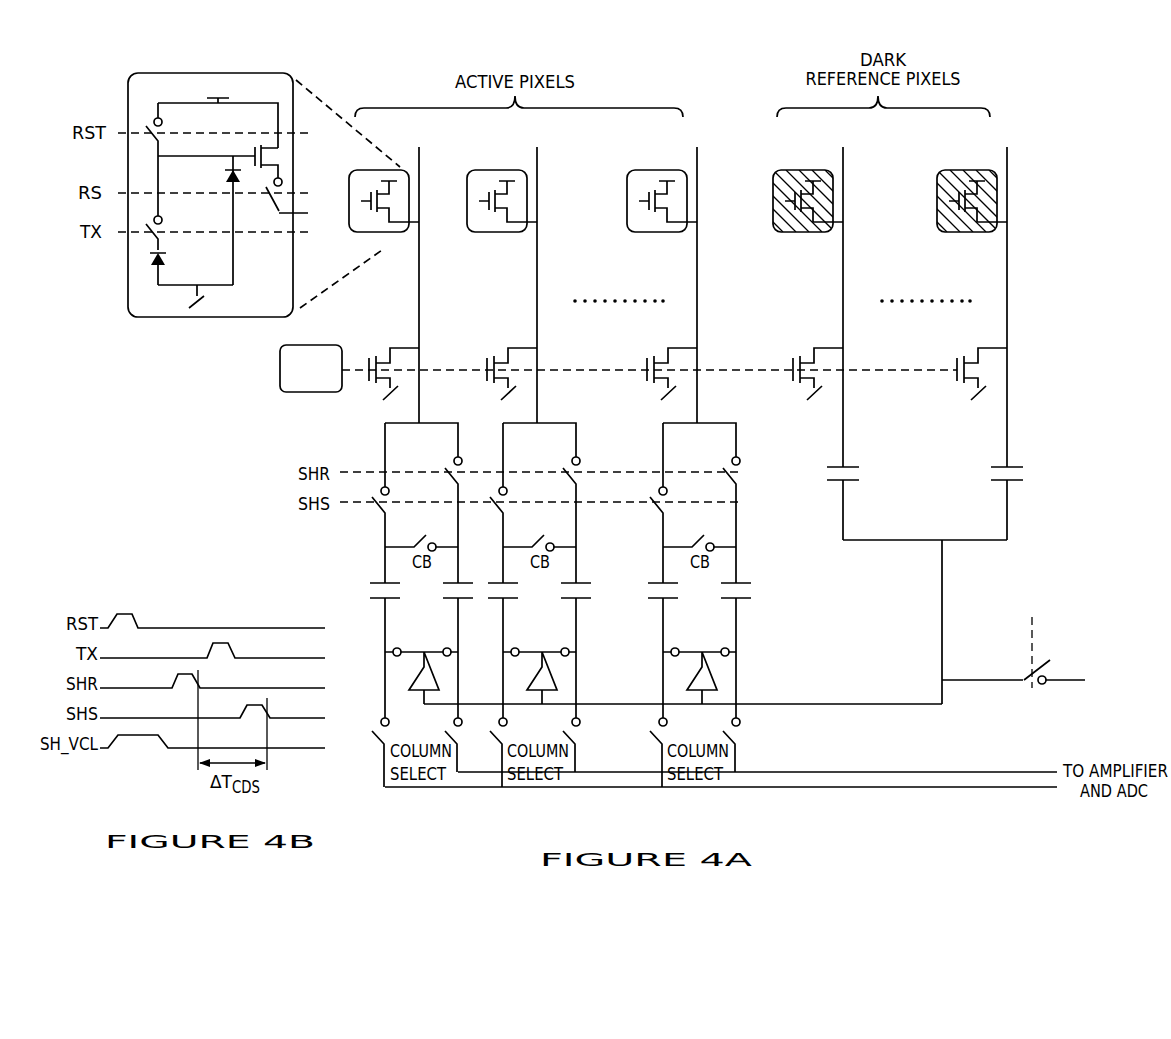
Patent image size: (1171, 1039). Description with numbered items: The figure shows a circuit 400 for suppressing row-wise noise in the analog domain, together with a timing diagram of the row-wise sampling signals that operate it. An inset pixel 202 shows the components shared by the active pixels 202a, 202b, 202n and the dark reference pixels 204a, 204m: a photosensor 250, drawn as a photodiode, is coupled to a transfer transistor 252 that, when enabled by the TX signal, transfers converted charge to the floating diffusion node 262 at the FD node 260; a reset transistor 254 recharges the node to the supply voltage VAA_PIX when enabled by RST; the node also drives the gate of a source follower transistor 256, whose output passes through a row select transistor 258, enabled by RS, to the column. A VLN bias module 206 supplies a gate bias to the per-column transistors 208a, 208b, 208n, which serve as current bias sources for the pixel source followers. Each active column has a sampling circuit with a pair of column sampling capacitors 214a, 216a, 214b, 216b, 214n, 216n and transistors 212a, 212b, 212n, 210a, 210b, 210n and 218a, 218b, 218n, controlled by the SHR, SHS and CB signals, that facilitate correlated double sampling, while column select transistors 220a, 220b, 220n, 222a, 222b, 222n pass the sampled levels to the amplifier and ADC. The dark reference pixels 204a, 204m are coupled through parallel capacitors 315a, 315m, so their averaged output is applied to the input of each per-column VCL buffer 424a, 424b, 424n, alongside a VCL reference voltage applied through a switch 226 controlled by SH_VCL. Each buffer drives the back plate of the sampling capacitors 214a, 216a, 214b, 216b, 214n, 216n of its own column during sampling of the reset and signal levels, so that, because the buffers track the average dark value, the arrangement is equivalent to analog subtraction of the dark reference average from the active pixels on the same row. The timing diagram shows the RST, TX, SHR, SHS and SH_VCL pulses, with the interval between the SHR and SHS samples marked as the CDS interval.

The pixel 202 is at (248, 72).
The reset transistor 254 is at (163, 123).
The source follower transistor 256 is at (258, 143).
The floating diffusion node 262 is at (235, 157).
The FD node 260 is at (202, 176).
The transfer transistor 252 is at (163, 221).
The row select transistor 258 is at (266, 190).
The photosensor 250 is at (177, 270).
The active pixel 202a is at (384, 232).
The active pixel 202b is at (502, 232).
The active pixel 202n is at (662, 232).
The dark reference pixel 204a is at (808, 232).
The dark reference pixel 204m is at (972, 232).
The per-column transistor 208a is at (383, 350).
The per-column transistor 208b is at (501, 350).
The per-column transistor 208n is at (661, 350).
The VLN bias module 206 is at (284, 393).
The transistor 212a is at (452, 458).
The transistor 212b is at (570, 458).
The transistor 212n is at (730, 458).
The transistor 210a is at (376, 517).
The transistor 210b is at (494, 517).
The transistor 210n is at (654, 517).
The transistor 218a is at (421, 538).
The transistor 218b is at (539, 538).
The transistor 218n is at (699, 538).
The capacitor 315a is at (830, 473).
The capacitor 315m is at (993, 473).
The column sampling capacitor 214a is at (375, 602).
The column sampling capacitor 214b is at (493, 602).
The column sampling capacitor 214n is at (653, 602).
The column sampling capacitor 216a is at (444, 602).
The column sampling capacitor 216b is at (562, 602).
The column sampling capacitor 216n is at (722, 602).
The per-column VCL buffer 424a is at (409, 680).
The per-column VCL buffer 424b is at (527, 680).
The per-column VCL buffer 424n is at (687, 681).
The transistor 220a is at (378, 726).
The transistor 220b is at (509, 732).
The transistor 220n is at (651, 732).
The transistor 222a is at (423, 734).
The transistor 222b is at (541, 734).
The transistor 222n is at (703, 735).
The SH_VCL switch 226 is at (1049, 661).
The circuit 400 is at (1064, 112).